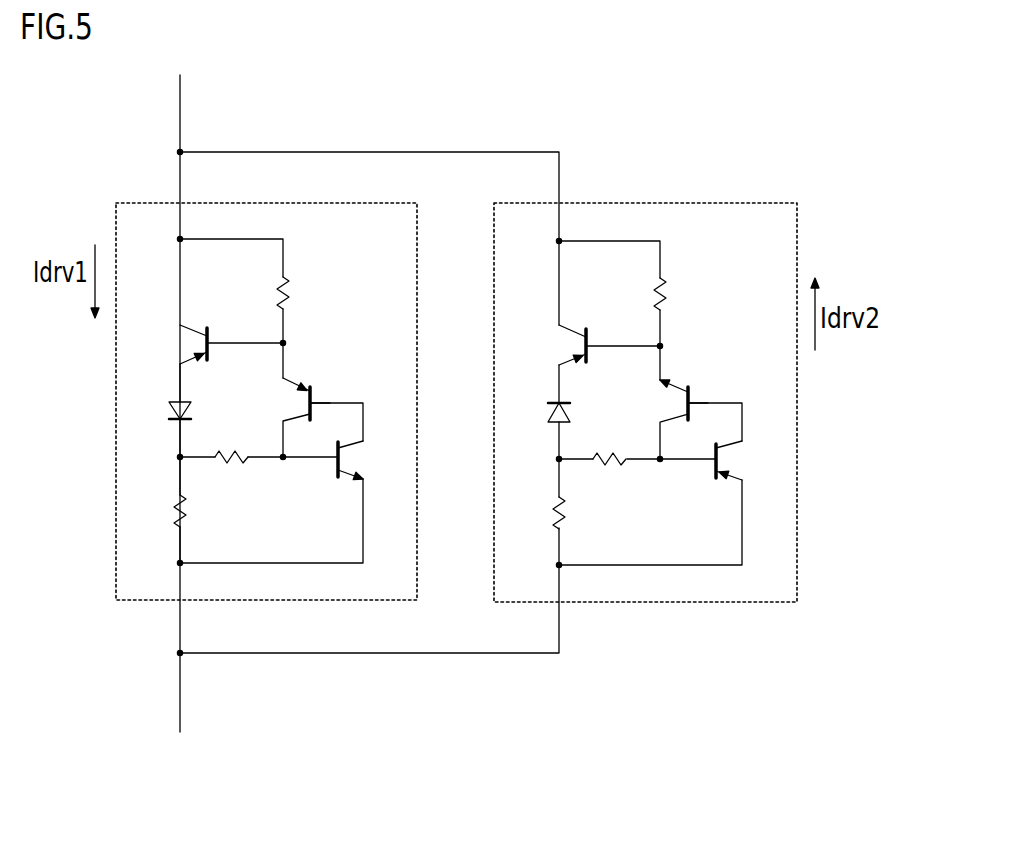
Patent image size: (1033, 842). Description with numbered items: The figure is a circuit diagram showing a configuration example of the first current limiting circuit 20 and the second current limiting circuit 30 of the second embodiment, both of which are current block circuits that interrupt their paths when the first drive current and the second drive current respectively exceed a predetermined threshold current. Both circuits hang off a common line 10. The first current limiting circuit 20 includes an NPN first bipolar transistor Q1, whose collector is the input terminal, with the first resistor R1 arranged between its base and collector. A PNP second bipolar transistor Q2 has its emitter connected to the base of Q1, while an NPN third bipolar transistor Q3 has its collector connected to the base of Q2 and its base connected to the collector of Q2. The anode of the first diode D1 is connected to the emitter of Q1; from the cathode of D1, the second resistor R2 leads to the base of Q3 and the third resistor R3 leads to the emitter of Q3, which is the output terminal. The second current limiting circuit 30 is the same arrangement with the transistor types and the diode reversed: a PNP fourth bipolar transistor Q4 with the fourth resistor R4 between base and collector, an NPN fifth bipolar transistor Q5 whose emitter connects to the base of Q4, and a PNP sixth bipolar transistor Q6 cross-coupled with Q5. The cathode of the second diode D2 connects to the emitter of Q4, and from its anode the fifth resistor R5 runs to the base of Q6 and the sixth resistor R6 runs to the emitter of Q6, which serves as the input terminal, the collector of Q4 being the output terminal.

The drive current line 10 is at (365, 420).
The first current limiting circuit 20 is at (238, 401).
The second current limiting circuit 30 is at (673, 402).
The first bipolar transistor Q1 is at (219, 345).
The second bipolar transistor Q2 is at (306, 405).
The third bipolar transistor Q3 is at (335, 460).
The fourth bipolar transistor Q4 is at (596, 345).
The fifth bipolar transistor Q5 is at (684, 406).
The sixth bipolar transistor Q6 is at (713, 460).
The first resistor R1 is at (297, 293).
The second resistor R2 is at (231, 474).
The third resistor R3 is at (164, 510).
The fourth resistor R4 is at (676, 295).
The fifth resistor R5 is at (609, 475).
The sixth resistor R6 is at (543, 512).
The first diode D1 is at (167, 410).
The second diode D2 is at (545, 411).